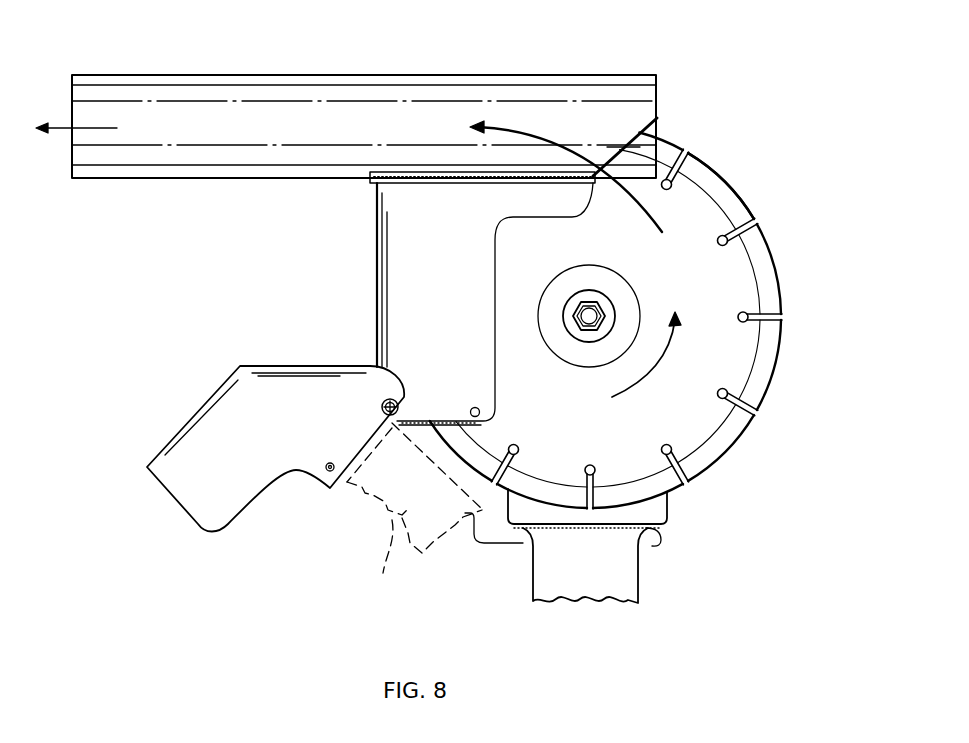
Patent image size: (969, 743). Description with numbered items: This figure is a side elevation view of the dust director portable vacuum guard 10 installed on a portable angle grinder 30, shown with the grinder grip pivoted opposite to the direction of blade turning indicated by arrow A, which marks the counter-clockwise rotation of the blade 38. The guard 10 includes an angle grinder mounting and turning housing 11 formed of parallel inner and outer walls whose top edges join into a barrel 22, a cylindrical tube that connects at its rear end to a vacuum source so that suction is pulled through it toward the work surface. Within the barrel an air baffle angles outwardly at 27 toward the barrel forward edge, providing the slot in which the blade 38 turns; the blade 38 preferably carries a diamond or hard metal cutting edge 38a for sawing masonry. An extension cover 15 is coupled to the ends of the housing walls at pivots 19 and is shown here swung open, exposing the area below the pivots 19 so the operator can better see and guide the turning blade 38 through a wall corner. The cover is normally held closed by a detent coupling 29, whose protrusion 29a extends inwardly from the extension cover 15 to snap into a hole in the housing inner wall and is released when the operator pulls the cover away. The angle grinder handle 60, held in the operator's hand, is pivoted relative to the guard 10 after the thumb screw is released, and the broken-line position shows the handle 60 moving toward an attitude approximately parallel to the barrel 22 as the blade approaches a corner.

The dust director portable vacuum guard 10 is at (451, 316).
The angle grinder mounting and turning housing 11 is at (330, 254).
The extension cover 15 is at (162, 516).
The pivots 19 is at (382, 405).
The barrel 22 is at (351, 133).
The outward angling of air baffle 27 is at (655, 147).
The detent coupling 29 is at (466, 400).
The protrusion 29a is at (327, 469).
The portable angle grinder 30 is at (606, 339).
The blade 38 is at (688, 213).
The cutting edge 38a is at (740, 192).
The angle grinder handle 60 is at (574, 564).
The arrow A is at (593, 146).